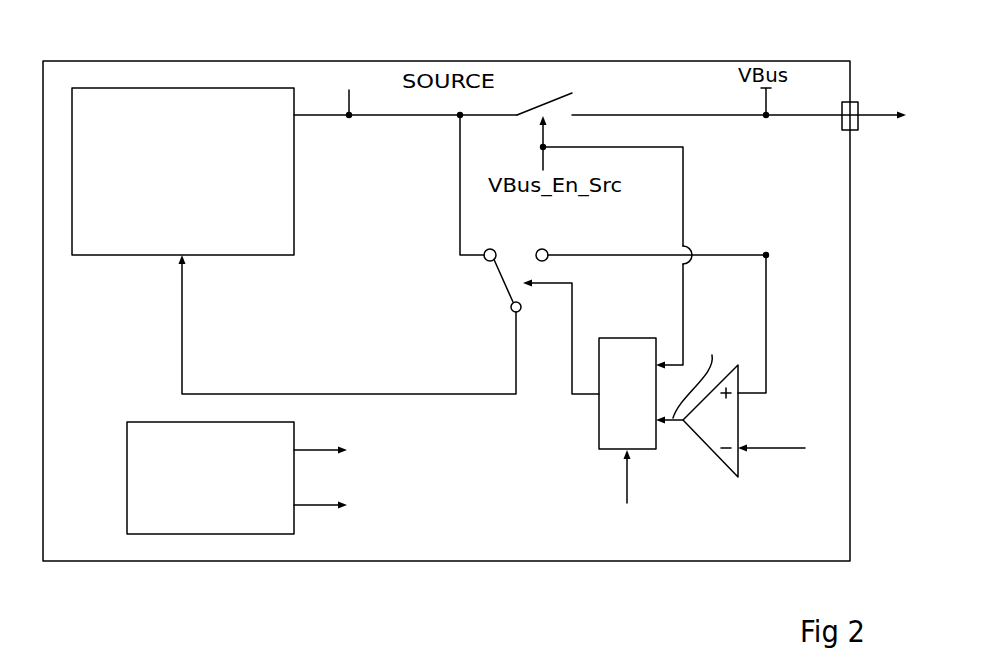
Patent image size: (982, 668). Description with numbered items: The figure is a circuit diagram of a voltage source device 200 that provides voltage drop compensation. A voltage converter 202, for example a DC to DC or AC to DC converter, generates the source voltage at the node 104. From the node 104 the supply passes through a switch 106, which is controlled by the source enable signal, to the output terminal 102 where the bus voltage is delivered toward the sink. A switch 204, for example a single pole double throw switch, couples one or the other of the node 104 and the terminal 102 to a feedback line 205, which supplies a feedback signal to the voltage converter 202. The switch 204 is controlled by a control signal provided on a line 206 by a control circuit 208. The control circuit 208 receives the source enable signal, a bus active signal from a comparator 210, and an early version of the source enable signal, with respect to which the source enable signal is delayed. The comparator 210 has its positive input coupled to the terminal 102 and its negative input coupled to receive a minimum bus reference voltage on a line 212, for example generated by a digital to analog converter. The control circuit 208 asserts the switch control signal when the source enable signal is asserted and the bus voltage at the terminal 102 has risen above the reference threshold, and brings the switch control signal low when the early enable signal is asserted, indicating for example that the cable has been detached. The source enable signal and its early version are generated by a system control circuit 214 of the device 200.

The voltage source device 200 is at (830, 73).
The output terminal 102 is at (860, 123).
The node 104 is at (349, 120).
The switch 106 is at (565, 105).
The voltage converter 202 is at (275, 233).
The switch 204 is at (515, 255).
The feedback line 205 is at (365, 393).
The line 206 is at (572, 320).
The control circuit 208 is at (608, 432).
The comparator 210 is at (713, 440).
The line 212 is at (783, 455).
The system control circuit 214 is at (283, 522).